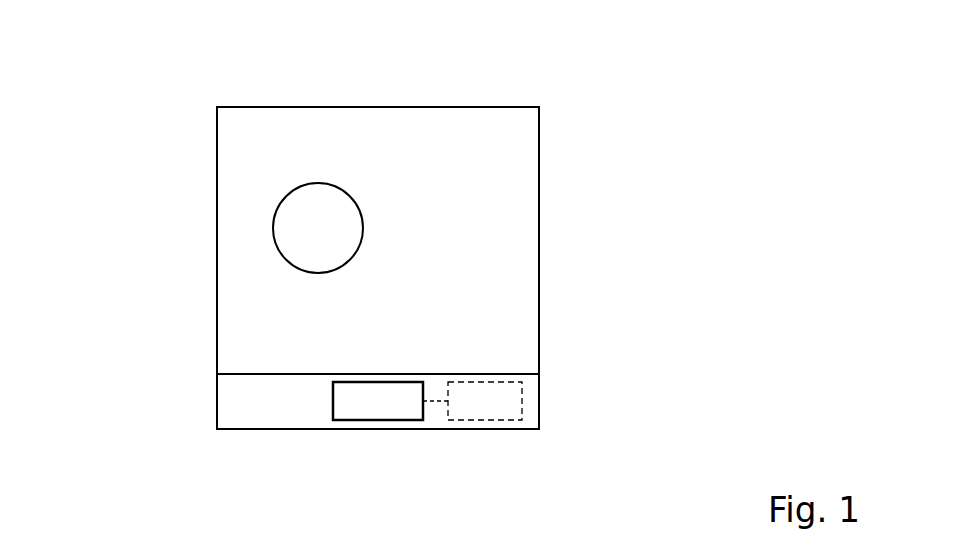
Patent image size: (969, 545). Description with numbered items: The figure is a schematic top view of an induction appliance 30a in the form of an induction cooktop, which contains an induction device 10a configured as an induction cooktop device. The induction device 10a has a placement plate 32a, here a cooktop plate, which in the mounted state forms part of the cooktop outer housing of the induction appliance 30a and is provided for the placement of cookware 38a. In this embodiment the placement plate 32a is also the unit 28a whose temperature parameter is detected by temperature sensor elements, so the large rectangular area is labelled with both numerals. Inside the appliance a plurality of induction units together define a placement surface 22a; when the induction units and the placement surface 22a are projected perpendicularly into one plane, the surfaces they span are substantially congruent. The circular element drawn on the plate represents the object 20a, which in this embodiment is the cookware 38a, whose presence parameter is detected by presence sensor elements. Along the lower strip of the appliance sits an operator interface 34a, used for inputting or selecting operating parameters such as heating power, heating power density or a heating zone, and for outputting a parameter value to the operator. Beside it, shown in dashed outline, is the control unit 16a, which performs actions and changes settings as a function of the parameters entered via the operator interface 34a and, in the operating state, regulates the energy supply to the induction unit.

The induction device 10a is at (638, 111).
The control unit 16a is at (488, 398).
The object 20a is at (195, 228).
The placement surface 22a is at (273, 142).
The unit 28a is at (378, 210).
The induction appliance 30a is at (722, 96).
The placement plate 32a is at (457, 140).
The operator interface 34a is at (387, 398).
The cookware 38a is at (274, 239).